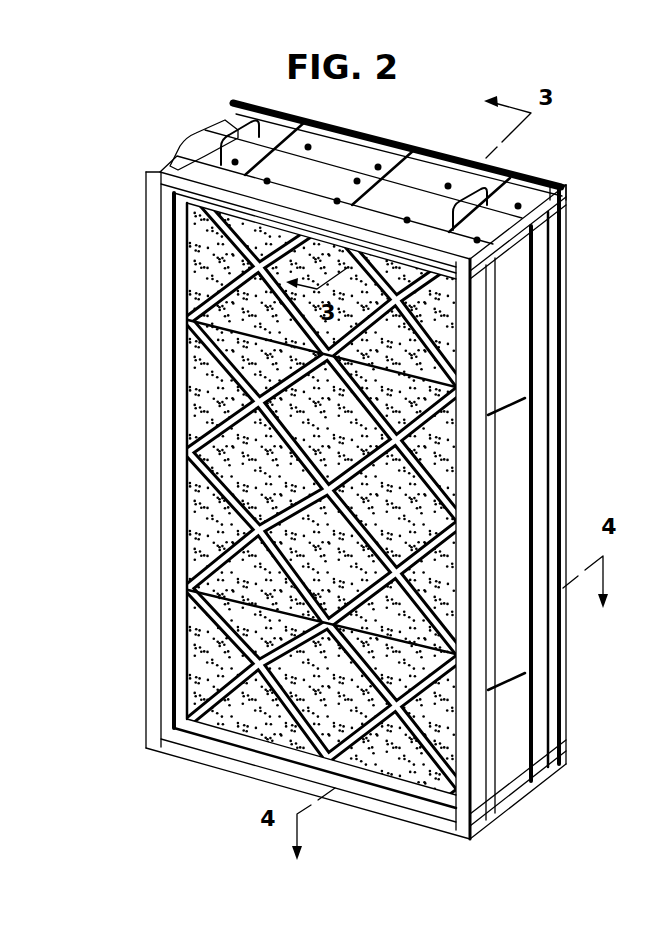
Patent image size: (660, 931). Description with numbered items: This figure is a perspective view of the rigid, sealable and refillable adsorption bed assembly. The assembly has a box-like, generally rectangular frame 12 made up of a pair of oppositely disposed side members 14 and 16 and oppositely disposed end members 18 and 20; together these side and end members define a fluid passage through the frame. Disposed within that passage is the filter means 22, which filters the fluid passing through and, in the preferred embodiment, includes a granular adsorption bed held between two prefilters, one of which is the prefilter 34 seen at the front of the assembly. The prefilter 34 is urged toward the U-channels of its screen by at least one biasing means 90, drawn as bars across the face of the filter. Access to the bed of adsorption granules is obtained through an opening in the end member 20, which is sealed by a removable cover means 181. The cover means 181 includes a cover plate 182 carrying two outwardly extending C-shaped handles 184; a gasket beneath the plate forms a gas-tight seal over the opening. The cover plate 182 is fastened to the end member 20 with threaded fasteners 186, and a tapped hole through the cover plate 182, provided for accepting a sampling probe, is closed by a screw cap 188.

The frame 12 is at (563, 513).
The side member 14 is at (566, 312).
The side member 16 is at (148, 283).
The end member 18 is at (397, 822).
The end member 20 is at (563, 180).
The filter means 22 is at (230, 457).
The prefilter 34 is at (212, 523).
The biasing means 90 is at (226, 331).
The cover means 181 is at (262, 102).
The cover plate 182 is at (207, 137).
The C-shaped handle 184 is at (205, 143).
The threaded fastener 186 is at (328, 124).
The screw cap 188 is at (398, 143).